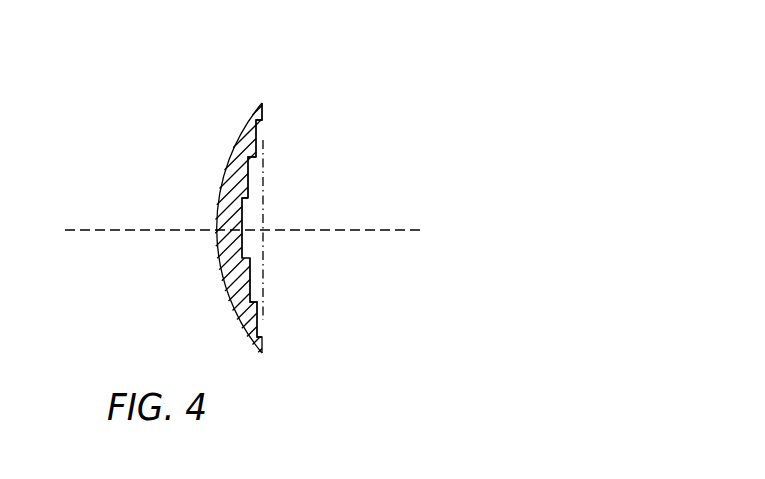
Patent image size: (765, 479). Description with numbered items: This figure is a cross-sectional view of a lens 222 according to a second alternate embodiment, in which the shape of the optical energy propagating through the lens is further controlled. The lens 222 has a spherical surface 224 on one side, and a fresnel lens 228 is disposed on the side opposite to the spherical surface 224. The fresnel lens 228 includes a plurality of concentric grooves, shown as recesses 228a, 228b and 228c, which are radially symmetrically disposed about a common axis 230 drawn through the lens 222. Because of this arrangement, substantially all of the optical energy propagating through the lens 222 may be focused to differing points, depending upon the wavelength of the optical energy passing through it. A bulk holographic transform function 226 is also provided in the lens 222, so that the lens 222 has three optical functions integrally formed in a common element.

The lens 222 is at (262, 103).
The spherical surface 224 is at (220, 181).
The bulk holographic transform function 226 is at (240, 279).
The fresnel lens 228 is at (365, 205).
The recess 228a is at (264, 141).
The recess 228b is at (265, 157).
The recess 228c is at (265, 229).
The common axis 230 is at (92, 232).